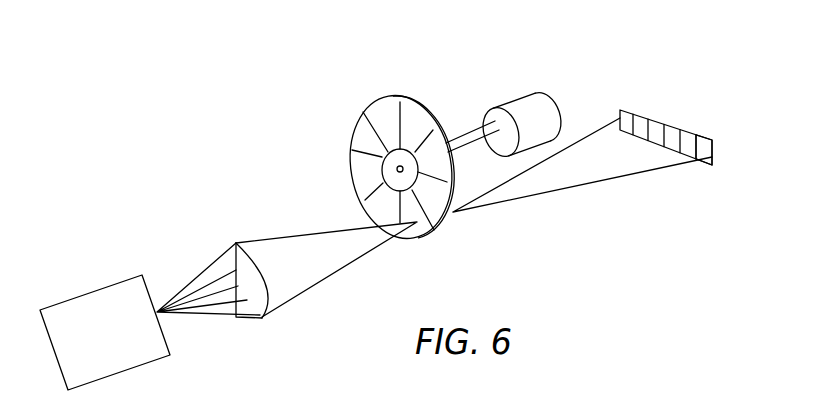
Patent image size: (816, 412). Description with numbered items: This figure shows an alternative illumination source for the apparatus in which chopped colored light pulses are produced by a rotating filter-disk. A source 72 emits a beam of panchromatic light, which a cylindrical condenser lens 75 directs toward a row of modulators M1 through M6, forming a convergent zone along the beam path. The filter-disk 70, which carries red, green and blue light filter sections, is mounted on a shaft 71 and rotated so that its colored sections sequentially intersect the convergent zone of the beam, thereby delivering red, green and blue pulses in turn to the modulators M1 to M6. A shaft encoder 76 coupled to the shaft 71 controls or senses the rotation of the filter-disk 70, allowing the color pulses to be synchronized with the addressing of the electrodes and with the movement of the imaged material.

The filter-disk 70 is at (379, 98).
The shaft 71 is at (466, 136).
The source 72 is at (103, 288).
The cylindrical condenser lens 75 is at (237, 243).
The shaft encoder 76 is at (526, 99).
The modulator M1 is at (618, 110).
The modulator M6 is at (703, 143).